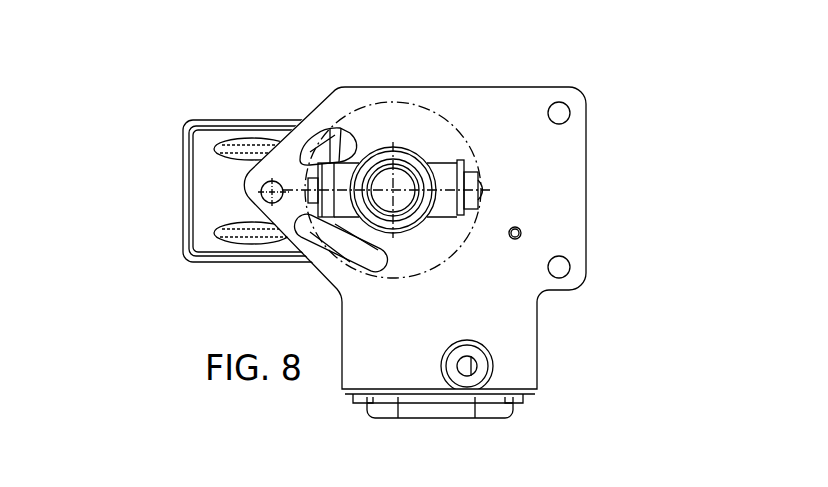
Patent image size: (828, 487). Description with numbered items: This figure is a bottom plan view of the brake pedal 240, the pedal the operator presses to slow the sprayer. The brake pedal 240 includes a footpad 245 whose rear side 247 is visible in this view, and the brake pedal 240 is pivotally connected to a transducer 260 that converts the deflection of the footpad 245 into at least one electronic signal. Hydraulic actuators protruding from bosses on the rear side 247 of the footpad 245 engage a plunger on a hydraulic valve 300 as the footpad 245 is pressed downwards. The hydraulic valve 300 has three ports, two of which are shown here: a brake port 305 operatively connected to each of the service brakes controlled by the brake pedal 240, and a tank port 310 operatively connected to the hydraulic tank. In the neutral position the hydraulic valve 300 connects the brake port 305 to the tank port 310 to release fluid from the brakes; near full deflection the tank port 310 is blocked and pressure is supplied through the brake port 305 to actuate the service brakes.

The brake pedal 240 is at (157, 117).
The footpad 245 is at (236, 120).
The rear side 247 is at (216, 205).
The transducer 260 is at (541, 343).
The hydraulic valve 300 is at (423, 143).
The brake port 305 is at (312, 200).
The tank port 310 is at (475, 183).